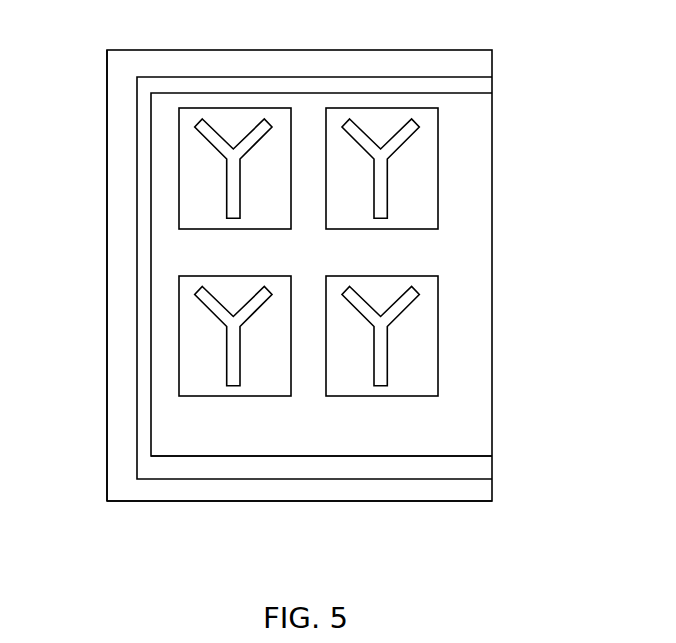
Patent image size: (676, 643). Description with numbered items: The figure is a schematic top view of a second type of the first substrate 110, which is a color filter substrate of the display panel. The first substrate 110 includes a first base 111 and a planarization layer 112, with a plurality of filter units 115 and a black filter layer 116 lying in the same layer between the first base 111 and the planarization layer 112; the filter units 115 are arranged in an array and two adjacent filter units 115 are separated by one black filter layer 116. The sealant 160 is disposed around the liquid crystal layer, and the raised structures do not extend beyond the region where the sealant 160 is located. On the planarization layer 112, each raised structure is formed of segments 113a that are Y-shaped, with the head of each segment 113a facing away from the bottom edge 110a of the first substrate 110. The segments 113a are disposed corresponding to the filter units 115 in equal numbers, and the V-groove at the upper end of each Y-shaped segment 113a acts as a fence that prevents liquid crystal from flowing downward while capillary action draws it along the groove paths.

The first substrate 110 is at (325, 32).
The bottom edge 110a is at (432, 502).
The first base 111 is at (118, 205).
The planarization layer 112 is at (470, 123).
The segment 113a is at (382, 173).
The filter unit 115 is at (420, 228).
The black filter layer 116 is at (307, 377).
The sealant 160 is at (480, 85).